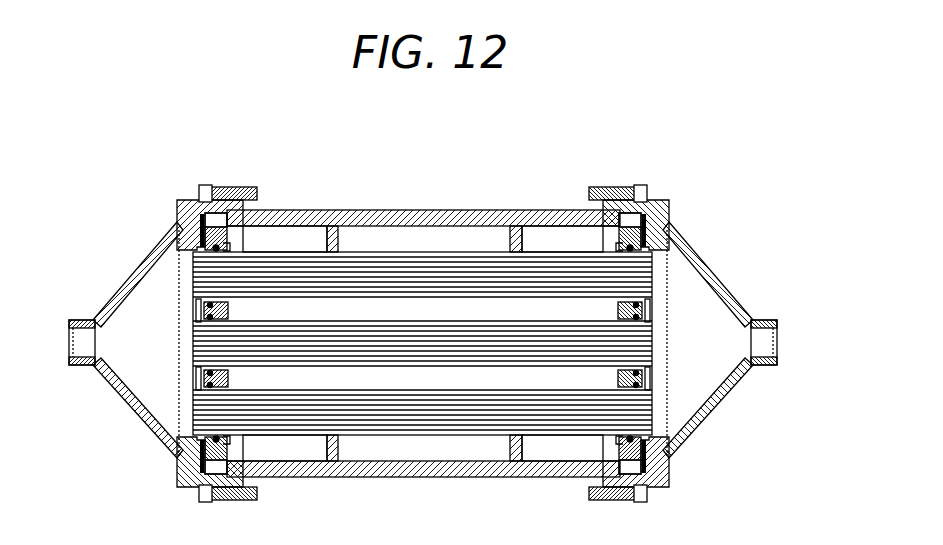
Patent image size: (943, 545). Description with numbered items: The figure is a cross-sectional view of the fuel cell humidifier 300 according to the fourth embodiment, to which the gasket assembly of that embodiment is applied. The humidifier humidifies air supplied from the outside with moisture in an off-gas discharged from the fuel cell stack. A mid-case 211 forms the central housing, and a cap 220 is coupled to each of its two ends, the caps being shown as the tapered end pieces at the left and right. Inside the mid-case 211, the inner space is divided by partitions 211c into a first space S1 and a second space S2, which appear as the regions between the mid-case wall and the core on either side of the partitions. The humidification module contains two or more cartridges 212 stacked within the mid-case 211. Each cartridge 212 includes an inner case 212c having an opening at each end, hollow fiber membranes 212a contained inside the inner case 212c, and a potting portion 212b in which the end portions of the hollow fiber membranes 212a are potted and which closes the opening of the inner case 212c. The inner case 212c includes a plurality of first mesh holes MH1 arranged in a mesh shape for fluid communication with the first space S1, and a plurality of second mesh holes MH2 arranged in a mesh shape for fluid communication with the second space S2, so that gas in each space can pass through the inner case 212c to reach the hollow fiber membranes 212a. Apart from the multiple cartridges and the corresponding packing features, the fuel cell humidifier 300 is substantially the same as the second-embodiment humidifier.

The cartridge 212 is at (180, 166).
The hollow fiber membranes 212a is at (196, 216).
The potting portion 212b is at (173, 222).
The inner case 212c is at (236, 186).
The mid-case 211 is at (356, 212).
The partitions 211c is at (505, 240).
The fuel cell humidifier 300 is at (438, 155).
The first mesh holes MH1 is at (273, 254).
The second mesh holes MH2 is at (556, 254).
The cap 220 is at (138, 264).
The first space S1 is at (293, 448).
The second space S2 is at (564, 448).